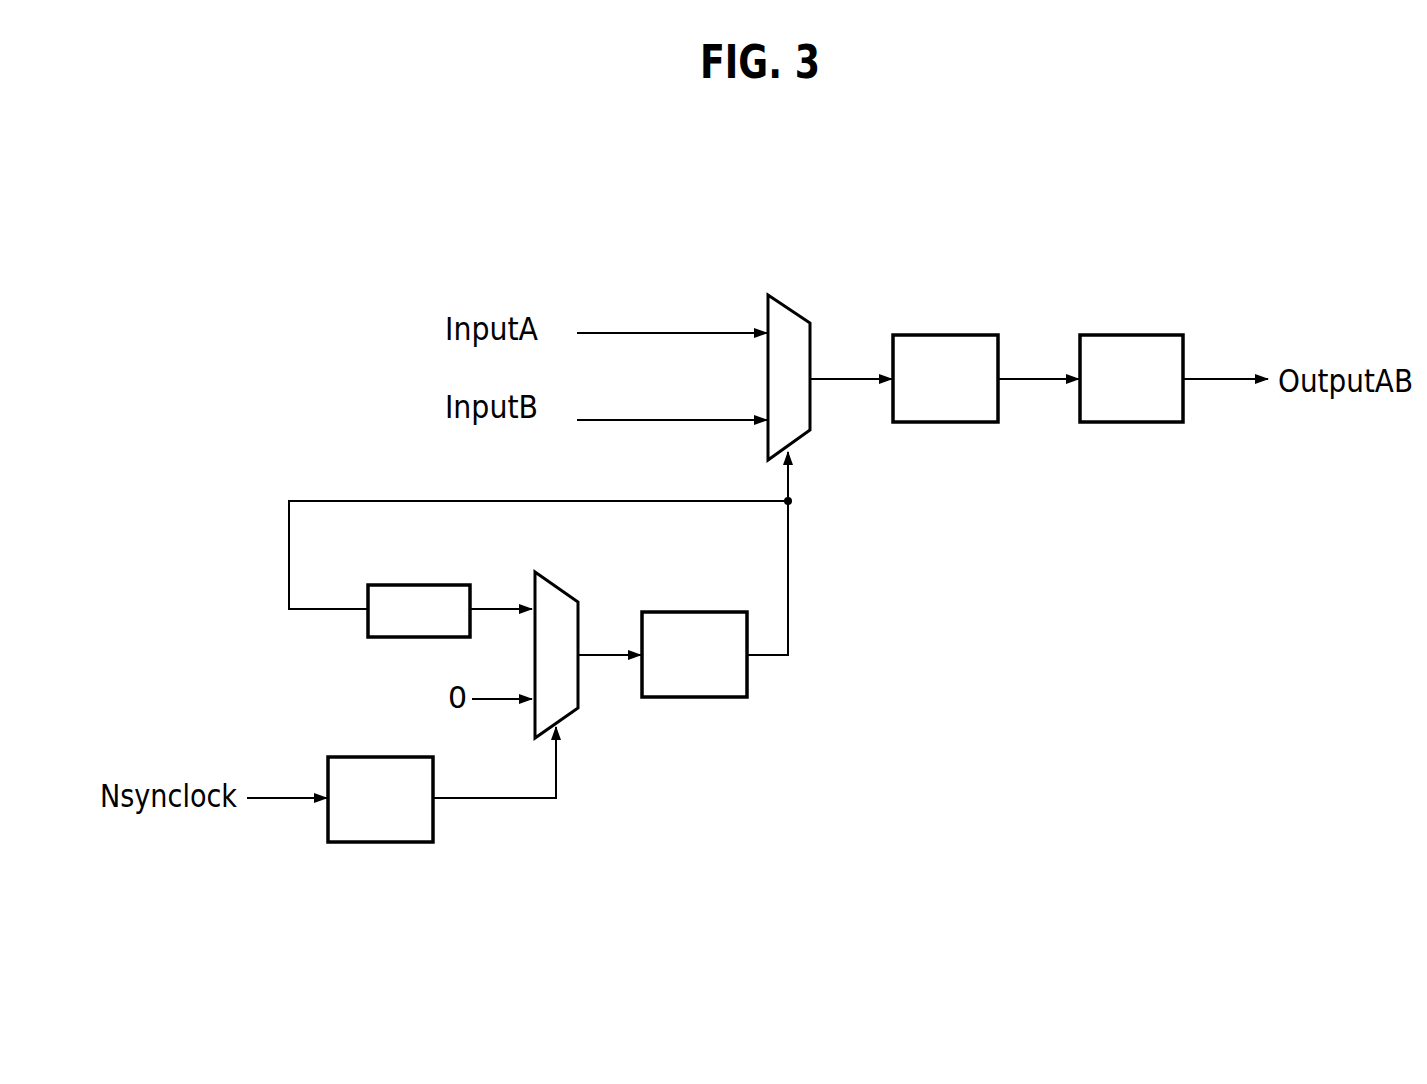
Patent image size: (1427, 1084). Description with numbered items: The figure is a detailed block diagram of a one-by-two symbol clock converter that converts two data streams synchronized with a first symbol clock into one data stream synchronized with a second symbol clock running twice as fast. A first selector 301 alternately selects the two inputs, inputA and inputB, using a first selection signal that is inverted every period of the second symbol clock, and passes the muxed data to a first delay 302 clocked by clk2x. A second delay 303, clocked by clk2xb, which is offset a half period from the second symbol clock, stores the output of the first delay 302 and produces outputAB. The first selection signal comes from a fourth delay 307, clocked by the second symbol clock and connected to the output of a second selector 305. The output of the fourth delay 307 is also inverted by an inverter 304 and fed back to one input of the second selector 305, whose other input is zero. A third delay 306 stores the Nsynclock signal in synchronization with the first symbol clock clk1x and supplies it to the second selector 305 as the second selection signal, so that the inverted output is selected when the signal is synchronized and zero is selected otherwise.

The first selector 301 is at (789, 318).
The first delay 302 is at (944, 345).
The second delay 303 is at (1130, 345).
The inverter 304 is at (411, 592).
The second selector 305 is at (564, 598).
The third delay 306 is at (378, 765).
The fourth delay 307 is at (687, 620).